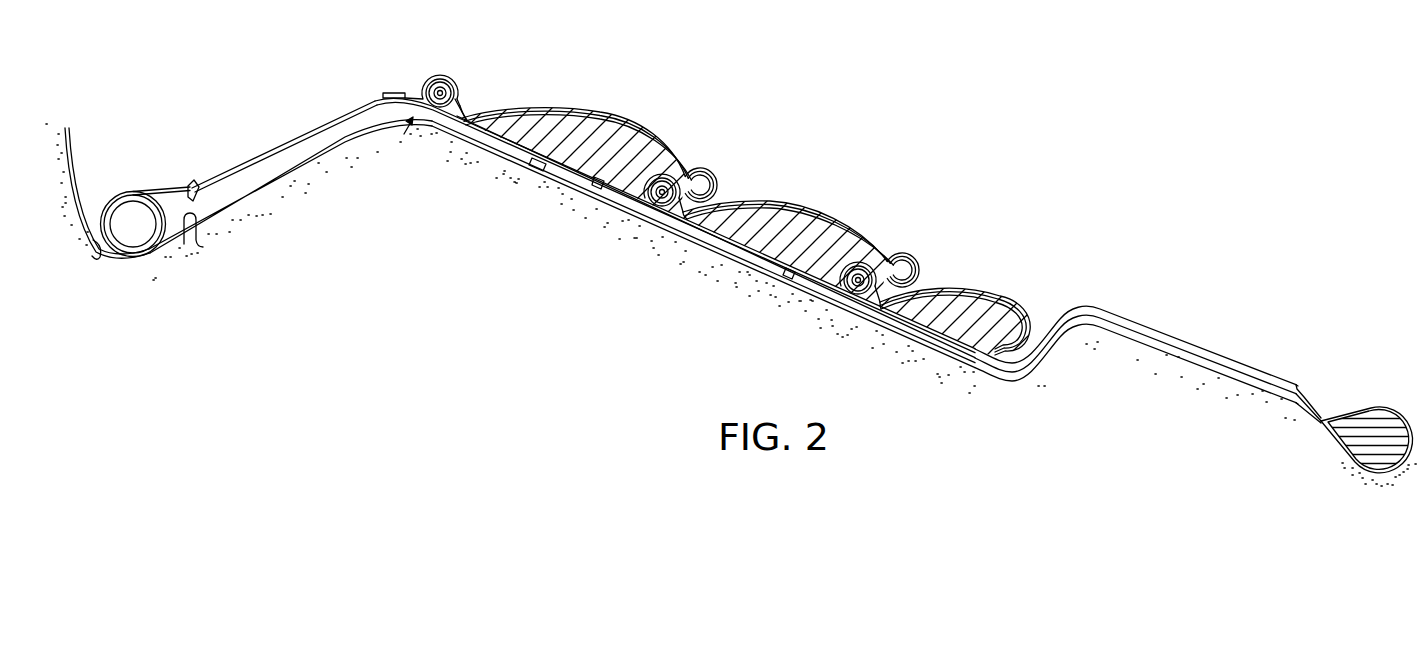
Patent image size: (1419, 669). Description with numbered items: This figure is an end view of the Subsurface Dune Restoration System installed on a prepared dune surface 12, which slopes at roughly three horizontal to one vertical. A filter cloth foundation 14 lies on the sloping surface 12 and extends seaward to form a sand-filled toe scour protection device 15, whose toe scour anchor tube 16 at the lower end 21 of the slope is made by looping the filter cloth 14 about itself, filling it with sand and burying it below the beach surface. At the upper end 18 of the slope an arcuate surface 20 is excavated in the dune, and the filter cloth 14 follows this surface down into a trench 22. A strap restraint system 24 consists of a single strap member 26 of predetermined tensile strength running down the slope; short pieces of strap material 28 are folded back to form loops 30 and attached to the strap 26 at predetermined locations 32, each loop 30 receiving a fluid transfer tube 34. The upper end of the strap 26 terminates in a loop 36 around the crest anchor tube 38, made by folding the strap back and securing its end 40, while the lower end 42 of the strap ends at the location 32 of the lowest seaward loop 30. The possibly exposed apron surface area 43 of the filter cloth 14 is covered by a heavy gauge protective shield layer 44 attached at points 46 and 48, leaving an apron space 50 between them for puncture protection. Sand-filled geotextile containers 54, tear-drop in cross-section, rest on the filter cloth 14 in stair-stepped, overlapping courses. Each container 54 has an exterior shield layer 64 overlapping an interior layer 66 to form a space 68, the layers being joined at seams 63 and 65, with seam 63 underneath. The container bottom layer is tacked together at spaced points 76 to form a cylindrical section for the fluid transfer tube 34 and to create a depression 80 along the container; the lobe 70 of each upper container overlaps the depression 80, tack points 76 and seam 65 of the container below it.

The dune surface 12 is at (540, 165).
The filter cloth foundation 14 is at (72, 170).
The toe scour protection device 15 is at (1290, 300).
The toe scour anchor tube 16 is at (1383, 407).
The upper end of sloping surface 18 is at (198, 240).
The arcuate surface 20 is at (374, 120).
The lower end of sloping surface 21 is at (1350, 410).
The trench 22 is at (100, 258).
The strap restraint system 24 is at (363, 104).
The strap member 26 is at (763, 258).
The short pieces of strap material 28 is at (428, 75).
The loops 30 is at (447, 82).
The attachment locations 32 is at (398, 92).
The fluid transfer tube 34 is at (458, 93).
The upper loop 36 is at (164, 188).
The crest anchor tube 38 is at (126, 192).
The strap end 40 is at (195, 192).
The lower end of strap 42 is at (822, 263).
The exposed apron surface area 43 is at (1260, 378).
The protective shield layer 44 is at (1232, 368).
The shield attachment point 46 is at (963, 364).
The shield attachment point 48 is at (1320, 425).
The apron space 50 is at (1197, 357).
The sand-filled geotextile container 54 is at (746, 233).
The seam 63 is at (960, 341).
The exterior shield layer 64 is at (587, 112).
The seam 65 is at (898, 306).
The interior upper layer 66 is at (620, 124).
The container space 68 is at (647, 137).
The container lobe 70 is at (703, 187).
The tacking points 76 is at (471, 118).
The depression 80 is at (467, 120).